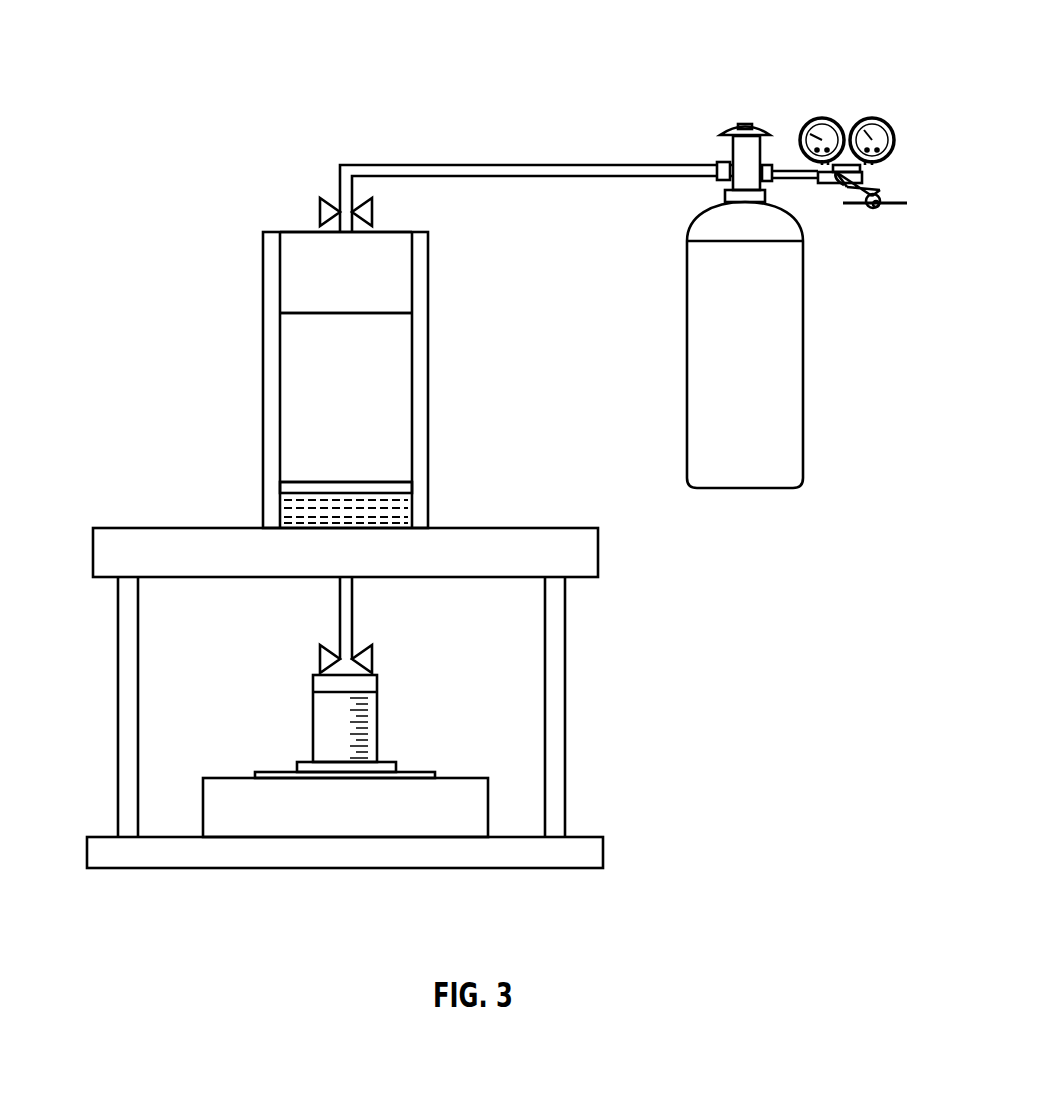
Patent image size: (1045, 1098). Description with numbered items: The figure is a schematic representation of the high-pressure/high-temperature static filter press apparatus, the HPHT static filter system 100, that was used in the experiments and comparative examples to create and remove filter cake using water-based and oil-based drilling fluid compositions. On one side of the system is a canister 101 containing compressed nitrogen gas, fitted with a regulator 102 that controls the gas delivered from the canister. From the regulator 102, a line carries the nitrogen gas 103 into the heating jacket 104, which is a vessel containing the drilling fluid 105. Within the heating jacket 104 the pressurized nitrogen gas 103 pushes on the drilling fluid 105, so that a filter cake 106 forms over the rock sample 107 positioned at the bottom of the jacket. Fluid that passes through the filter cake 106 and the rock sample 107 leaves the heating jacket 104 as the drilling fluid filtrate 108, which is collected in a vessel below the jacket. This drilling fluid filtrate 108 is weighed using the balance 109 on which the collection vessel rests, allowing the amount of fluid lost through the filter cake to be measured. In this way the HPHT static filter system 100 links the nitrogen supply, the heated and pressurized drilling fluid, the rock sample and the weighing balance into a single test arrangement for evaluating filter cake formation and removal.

The HPHT static filter system 100 is at (127, 45).
The canister 101 is at (803, 345).
The regulator 102 is at (868, 184).
The nitrogen gas 103 is at (310, 278).
The heating jacket 104 is at (267, 330).
The drilling fluid 105 is at (310, 432).
The filter cake 106 is at (293, 488).
The rock sample 107 is at (293, 520).
The drilling fluid filtrate 108 is at (312, 712).
The balance 109 is at (203, 813).